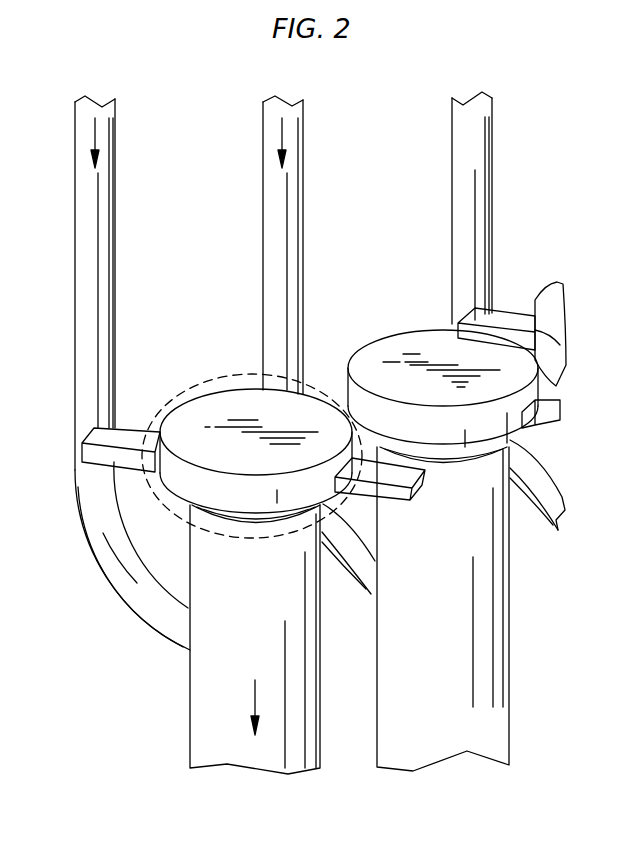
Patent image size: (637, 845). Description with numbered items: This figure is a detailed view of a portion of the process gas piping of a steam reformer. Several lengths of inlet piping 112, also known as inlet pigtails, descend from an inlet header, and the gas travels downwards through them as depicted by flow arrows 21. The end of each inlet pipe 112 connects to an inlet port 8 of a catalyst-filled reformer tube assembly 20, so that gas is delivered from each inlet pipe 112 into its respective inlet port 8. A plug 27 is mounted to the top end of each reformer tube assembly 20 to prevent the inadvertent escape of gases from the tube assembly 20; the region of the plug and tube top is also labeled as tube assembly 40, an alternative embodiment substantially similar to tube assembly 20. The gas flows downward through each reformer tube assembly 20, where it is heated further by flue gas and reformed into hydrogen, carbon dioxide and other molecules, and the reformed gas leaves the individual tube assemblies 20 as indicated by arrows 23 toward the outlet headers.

The inlet port 8 is at (190, 650).
The reformer tube assembly 20 is at (238, 650).
The flow arrows 21 is at (95, 143).
The arrows 23 is at (257, 702).
The plug 27 is at (250, 400).
The steam reformer tube assembly 40 is at (198, 388).
The inlet piping 112 is at (103, 220).